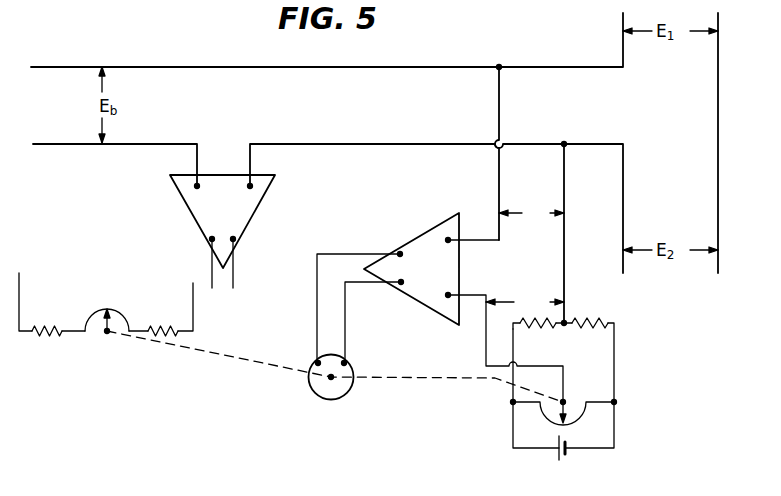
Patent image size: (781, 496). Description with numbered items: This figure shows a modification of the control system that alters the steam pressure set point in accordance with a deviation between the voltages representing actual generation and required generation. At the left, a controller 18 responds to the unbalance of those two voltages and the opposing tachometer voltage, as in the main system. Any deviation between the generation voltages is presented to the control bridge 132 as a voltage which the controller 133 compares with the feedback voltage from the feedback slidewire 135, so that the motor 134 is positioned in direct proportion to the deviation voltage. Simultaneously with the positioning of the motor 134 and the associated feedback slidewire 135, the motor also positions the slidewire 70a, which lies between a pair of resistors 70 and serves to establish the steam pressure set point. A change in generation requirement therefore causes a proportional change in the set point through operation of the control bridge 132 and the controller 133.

The controller 18 is at (200, 201).
The resistor 70 is at (50, 328).
The slidewire 70a is at (113, 309).
The control bridge 132 is at (531, 275).
The controller 133 is at (428, 242).
The motor 134 is at (318, 387).
The feedback slidewire 135 is at (587, 413).